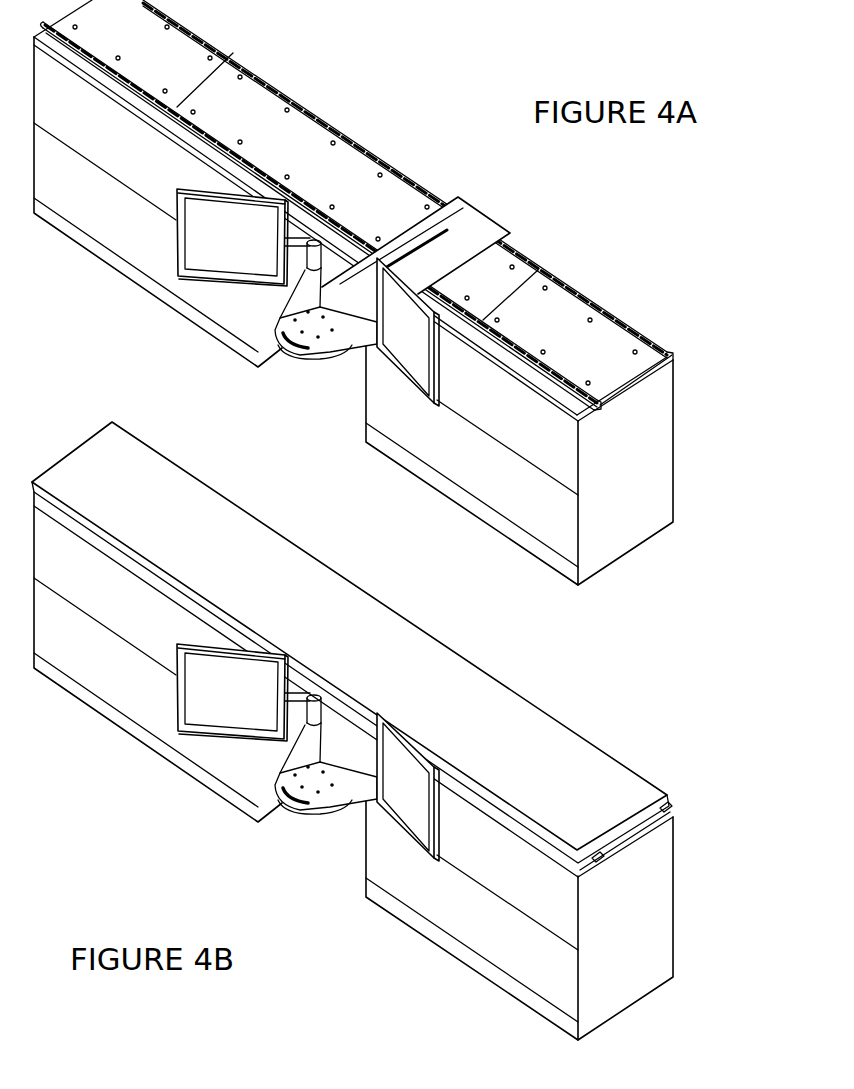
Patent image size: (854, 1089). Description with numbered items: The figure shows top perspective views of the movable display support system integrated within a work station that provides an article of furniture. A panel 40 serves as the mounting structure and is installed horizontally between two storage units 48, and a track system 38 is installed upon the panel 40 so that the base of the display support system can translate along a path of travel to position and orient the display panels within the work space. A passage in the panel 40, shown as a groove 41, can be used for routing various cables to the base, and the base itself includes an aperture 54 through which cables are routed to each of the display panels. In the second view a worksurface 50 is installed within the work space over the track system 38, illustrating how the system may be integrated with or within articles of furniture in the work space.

In FIG. 4A, the track system 38 is at (387, 214).
In FIG. 4B, the track system 38 is at (637, 832).
In FIG. 4A, the panel 40 is at (556, 405).
In FIG. 4B, the panel 40 is at (582, 870).
In FIG. 4A, the groove 41 is at (596, 410).
In FIG. 4A, the storage units 48 is at (127, 232).
In FIG. 4B, the storage units 48 is at (113, 683).
In FIG. 4B, the worksurface 50 is at (547, 743).
In FIG. 4A, the aperture 54 is at (458, 207).